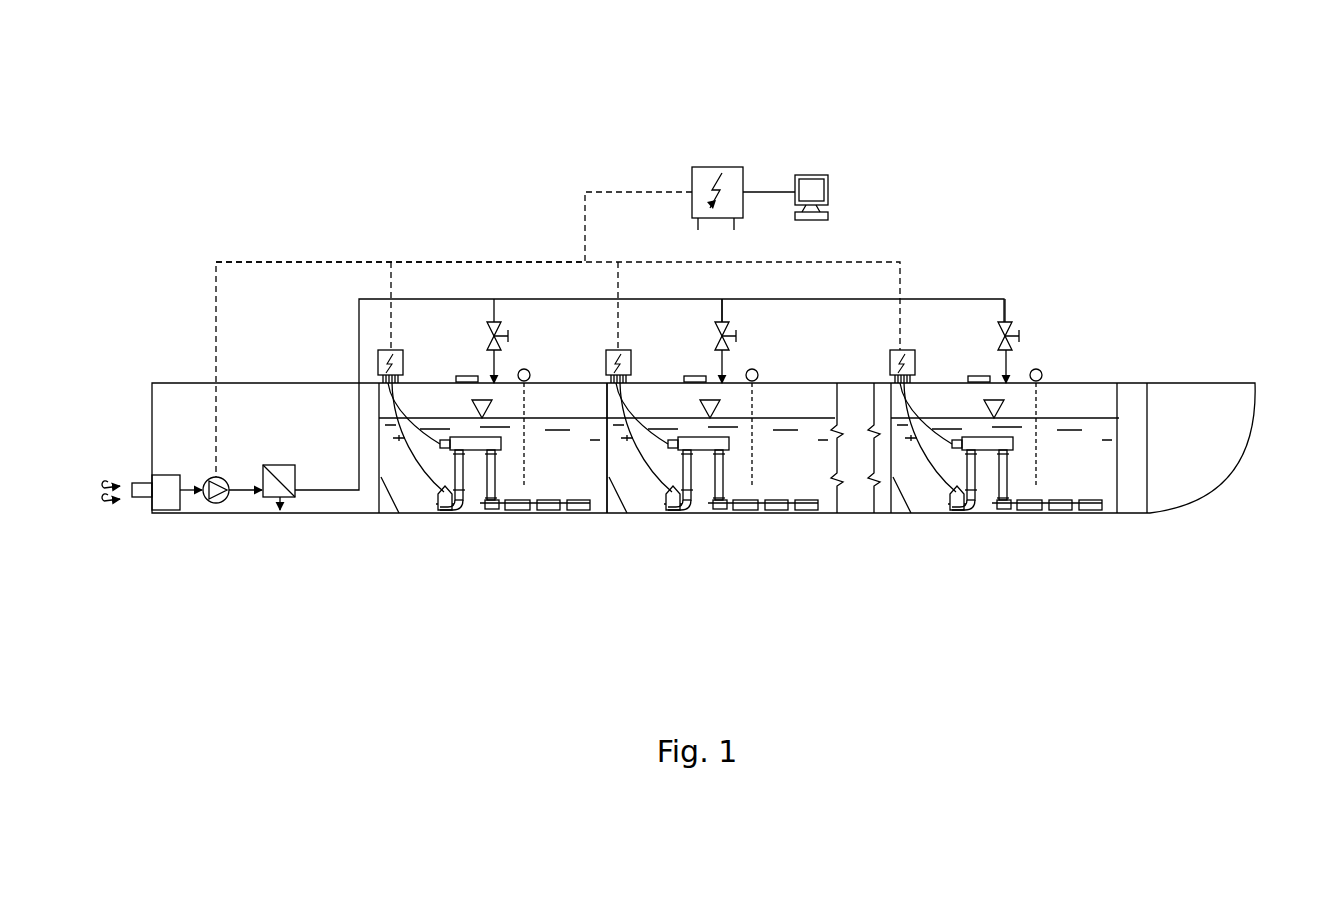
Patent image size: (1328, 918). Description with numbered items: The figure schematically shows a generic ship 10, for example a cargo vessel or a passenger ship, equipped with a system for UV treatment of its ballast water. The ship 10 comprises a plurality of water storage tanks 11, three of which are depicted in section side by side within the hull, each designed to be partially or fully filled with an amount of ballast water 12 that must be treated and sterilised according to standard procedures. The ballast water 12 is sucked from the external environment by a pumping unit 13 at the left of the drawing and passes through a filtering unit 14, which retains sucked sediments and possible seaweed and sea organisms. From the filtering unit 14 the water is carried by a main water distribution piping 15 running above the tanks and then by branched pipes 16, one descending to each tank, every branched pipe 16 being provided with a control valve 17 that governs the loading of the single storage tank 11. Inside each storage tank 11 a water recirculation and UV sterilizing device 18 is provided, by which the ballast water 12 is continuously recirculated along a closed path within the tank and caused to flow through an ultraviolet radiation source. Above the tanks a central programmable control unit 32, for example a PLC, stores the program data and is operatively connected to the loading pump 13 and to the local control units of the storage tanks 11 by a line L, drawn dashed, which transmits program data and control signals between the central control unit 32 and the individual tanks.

The ship 10 is at (1225, 395).
The water storage tank 11 is at (415, 400).
The ballast water 12 is at (1105, 435).
The pumping unit 13 is at (218, 503).
The filtering unit 14 is at (266, 503).
The main water distribution piping 15 is at (940, 300).
The branched pipe 16 is at (494, 310).
The control valve 17 is at (508, 336).
The water recirculation and UV sterilizing device 18 is at (473, 527).
The central programmable control unit 32 is at (705, 178).
The line L is at (304, 262).